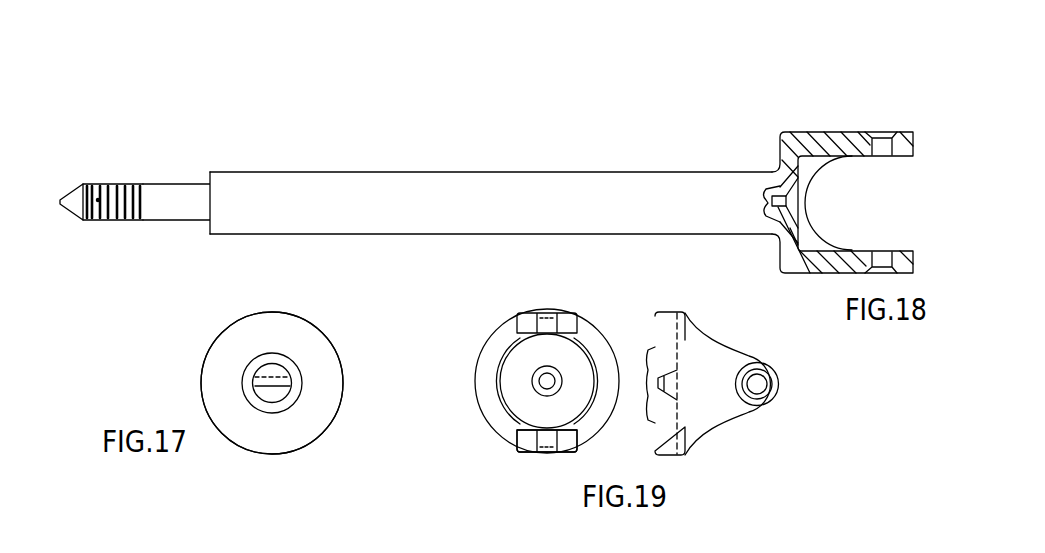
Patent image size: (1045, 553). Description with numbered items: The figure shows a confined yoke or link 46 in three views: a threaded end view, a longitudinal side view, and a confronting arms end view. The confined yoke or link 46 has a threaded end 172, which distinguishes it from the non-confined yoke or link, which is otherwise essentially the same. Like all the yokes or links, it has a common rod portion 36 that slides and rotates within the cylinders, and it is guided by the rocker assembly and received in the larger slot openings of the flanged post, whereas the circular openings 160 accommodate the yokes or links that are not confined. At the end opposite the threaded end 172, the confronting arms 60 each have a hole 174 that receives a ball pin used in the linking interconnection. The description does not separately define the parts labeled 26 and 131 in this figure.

In FIG. 18, the bone screw / shaft assembly 26 is at (408, 169).
In FIG. 17, the bone screw / shaft assembly 26 is at (204, 357).
In FIG. 19, the bone screw / shaft assembly 26 is at (499, 322).
In FIG. 18, the common rod portion 36 is at (259, 171).
In FIG. 17, the common rod portion 36 is at (303, 372).
In FIG. 18, the confined yoke or link 46 is at (486, 171).
In FIG. 17, the confined yoke or link 46 is at (303, 384).
In FIG. 18, the confronting arms 60 is at (822, 131).
In FIG. 17, the confronting arms 60 is at (332, 337).
In FIG. 19, the confronting arms 60 is at (565, 311).
In FIG. 18, the screw tip 131 is at (98, 197).
In FIG. 17, the screw tip 131 is at (281, 386).
In FIG. 18, the threaded end 172 is at (121, 223).
In FIG. 17, the threaded end 172 is at (278, 363).
In FIG. 18, the hole 174 is at (880, 131).
In FIG. 19, the hole 174 is at (540, 311).
In FIG. 19, the circular openings 160 is at (526, 452).